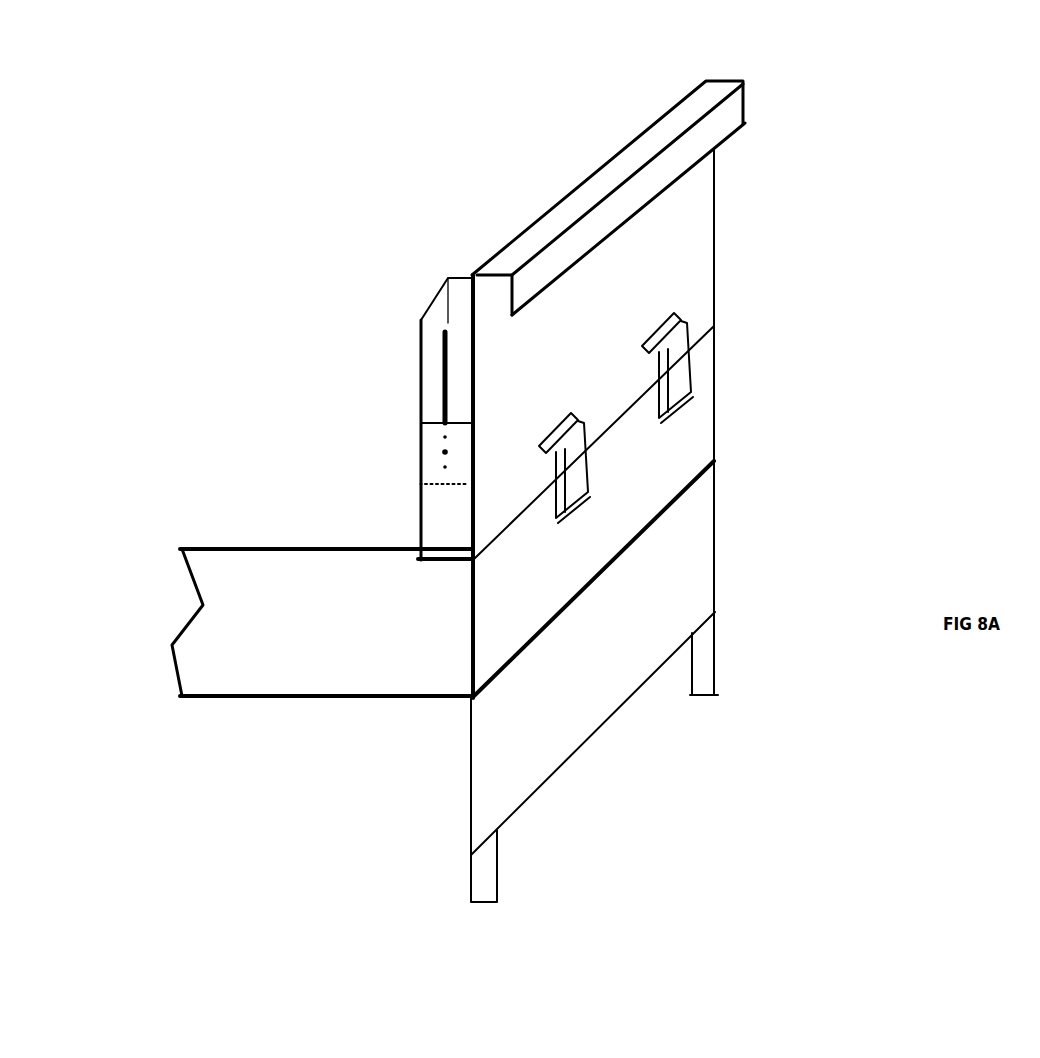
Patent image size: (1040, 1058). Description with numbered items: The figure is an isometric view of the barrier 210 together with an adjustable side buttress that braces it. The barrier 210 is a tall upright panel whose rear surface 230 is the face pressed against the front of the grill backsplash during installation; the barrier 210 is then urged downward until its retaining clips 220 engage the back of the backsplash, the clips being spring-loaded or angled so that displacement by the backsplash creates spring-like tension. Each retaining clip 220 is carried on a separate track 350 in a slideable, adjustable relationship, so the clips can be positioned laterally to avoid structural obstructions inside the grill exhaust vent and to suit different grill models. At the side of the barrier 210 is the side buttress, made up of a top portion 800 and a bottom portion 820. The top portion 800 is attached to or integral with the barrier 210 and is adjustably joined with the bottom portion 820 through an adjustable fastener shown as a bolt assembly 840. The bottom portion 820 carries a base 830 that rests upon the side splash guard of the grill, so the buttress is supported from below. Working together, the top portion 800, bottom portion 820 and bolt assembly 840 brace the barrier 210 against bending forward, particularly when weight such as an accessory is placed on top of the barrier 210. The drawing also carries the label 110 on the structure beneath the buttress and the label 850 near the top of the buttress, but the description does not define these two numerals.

The slab / floor deck 110 is at (308, 503).
The barrier 210 is at (587, 182).
The retaining clips 220 is at (682, 378).
The rear surface 230 is at (683, 221).
The tracks 350 is at (670, 318).
The top portion 800 is at (428, 298).
The bottom portion 820 is at (447, 517).
The base 830 is at (423, 563).
The bolt assembly 840 is at (427, 452).
The slot 850 is at (447, 278).